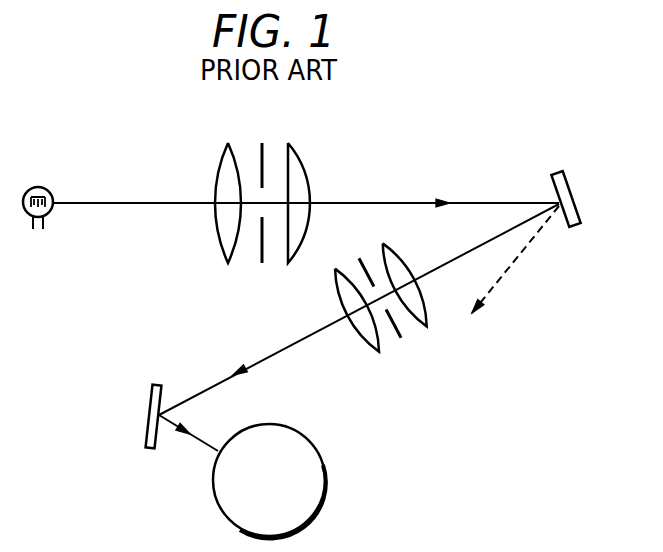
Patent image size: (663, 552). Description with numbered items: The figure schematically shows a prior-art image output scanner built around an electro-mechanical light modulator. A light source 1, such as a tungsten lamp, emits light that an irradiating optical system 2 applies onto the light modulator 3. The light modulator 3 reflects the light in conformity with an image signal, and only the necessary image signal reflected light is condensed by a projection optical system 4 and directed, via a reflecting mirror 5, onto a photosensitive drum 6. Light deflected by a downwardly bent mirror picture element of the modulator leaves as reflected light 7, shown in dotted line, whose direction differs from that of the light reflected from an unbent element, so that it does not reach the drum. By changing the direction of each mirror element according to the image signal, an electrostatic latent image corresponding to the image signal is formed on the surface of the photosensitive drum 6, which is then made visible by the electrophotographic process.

The light source 1 is at (38, 186).
The irradiating optical system 2 is at (315, 130).
The light modulator 3 is at (565, 176).
The projection optical system 4 is at (384, 311).
The reflecting mirror 5 is at (154, 387).
The photosensitive drum 6 is at (313, 482).
The reflected light 7 is at (510, 268).